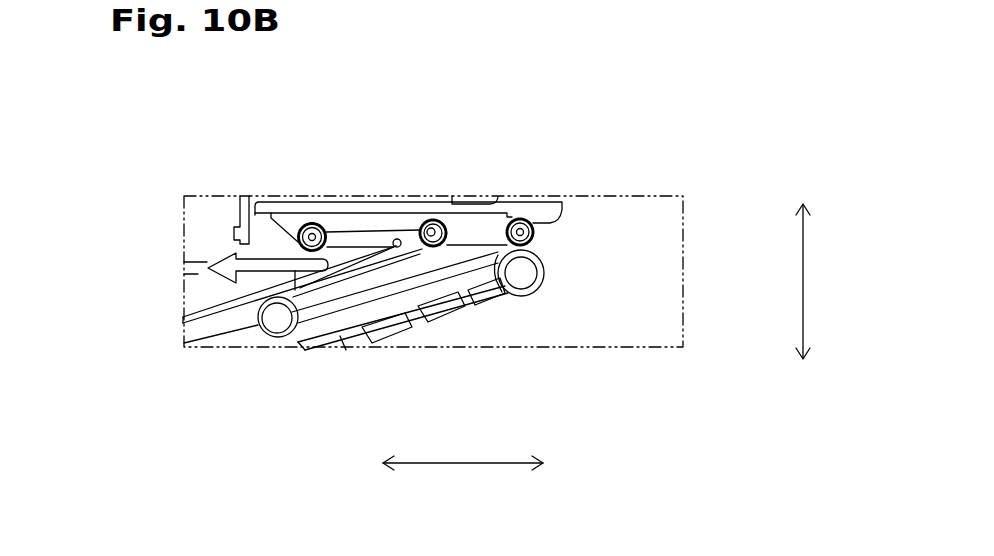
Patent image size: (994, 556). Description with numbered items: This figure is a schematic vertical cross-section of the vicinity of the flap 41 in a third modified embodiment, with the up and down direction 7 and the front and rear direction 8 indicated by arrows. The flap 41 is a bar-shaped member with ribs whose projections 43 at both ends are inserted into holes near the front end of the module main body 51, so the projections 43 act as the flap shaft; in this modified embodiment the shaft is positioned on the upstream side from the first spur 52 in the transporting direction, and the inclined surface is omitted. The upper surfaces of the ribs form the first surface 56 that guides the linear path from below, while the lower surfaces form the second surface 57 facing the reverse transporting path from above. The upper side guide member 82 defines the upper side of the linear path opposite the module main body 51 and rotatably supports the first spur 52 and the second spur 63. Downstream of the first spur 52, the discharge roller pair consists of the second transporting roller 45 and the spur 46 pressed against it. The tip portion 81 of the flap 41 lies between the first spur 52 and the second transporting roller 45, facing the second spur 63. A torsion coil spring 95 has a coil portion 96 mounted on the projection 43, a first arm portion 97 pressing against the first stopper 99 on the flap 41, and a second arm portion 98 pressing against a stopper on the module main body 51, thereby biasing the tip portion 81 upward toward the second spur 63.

The coil spring 95 is at (230, 288).
The first spur 52 is at (300, 237).
The first surface 56 is at (327, 244).
The first stopper 99 is at (394, 241).
The tip portion 81 is at (412, 225).
The second spur 63 is at (457, 211).
The spur 46 is at (519, 218).
The upper side guide member 82 is at (557, 212).
The module main body 51 is at (200, 290).
The second transporting roller 45 is at (543, 264).
The second arm portion 98 is at (220, 312).
The coil portion 96 is at (262, 333).
The projection 43 is at (277, 318).
The second surface 57 is at (327, 302).
The flap 41 is at (372, 300).
The first arm portion 97 is at (377, 268).
The up and down direction 7 is at (803, 280).
The front and rear direction 8 is at (480, 463).